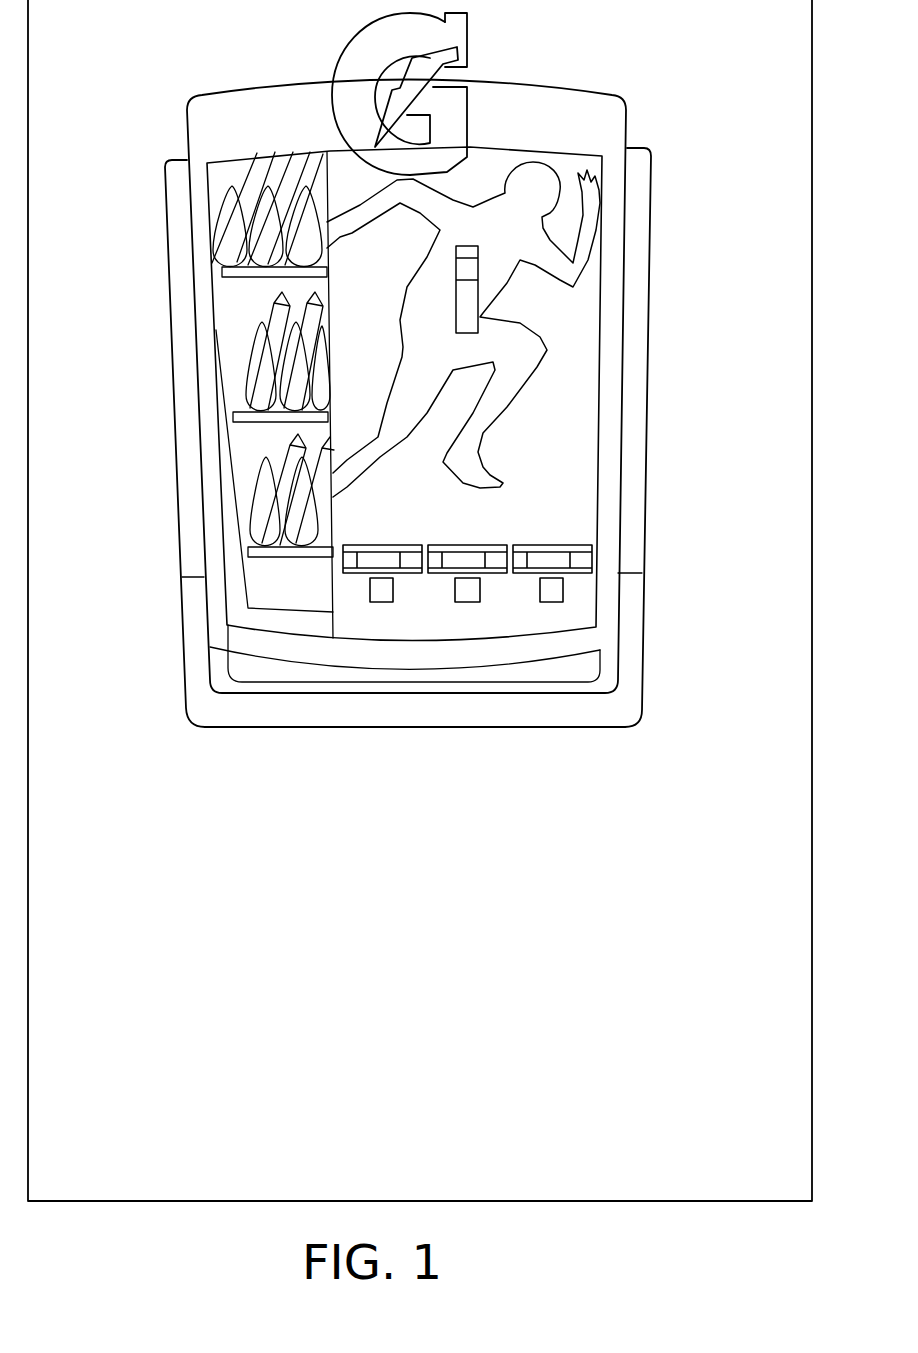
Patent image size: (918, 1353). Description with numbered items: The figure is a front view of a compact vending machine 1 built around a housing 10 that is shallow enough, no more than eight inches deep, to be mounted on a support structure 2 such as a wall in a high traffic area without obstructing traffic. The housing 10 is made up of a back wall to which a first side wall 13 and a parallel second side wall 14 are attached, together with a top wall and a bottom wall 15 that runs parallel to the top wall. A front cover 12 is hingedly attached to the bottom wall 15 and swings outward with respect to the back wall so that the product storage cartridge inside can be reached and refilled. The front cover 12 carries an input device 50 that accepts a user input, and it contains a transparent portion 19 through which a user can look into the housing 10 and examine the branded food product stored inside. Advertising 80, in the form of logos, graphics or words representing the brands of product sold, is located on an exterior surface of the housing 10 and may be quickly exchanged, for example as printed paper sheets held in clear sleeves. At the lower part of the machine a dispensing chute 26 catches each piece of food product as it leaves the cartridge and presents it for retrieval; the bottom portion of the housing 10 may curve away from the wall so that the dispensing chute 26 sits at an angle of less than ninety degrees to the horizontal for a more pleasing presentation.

The compact vending machine 1 is at (566, 64).
The support structure 2 is at (780, 775).
The housing 10 is at (638, 342).
The front cover 12 is at (588, 515).
The first side wall 13 is at (178, 497).
The second side wall 14 is at (650, 420).
The bottom wall 15 is at (555, 725).
The transparent portion 19 is at (265, 590).
The dispensing chute 26 is at (282, 687).
The input device 50 is at (381, 600).
The advertising 80 is at (592, 273).